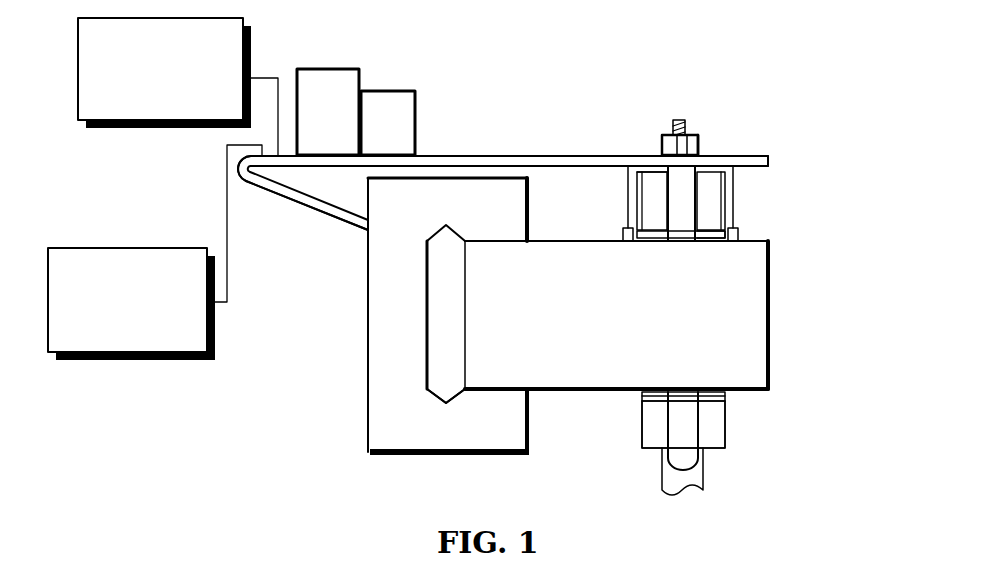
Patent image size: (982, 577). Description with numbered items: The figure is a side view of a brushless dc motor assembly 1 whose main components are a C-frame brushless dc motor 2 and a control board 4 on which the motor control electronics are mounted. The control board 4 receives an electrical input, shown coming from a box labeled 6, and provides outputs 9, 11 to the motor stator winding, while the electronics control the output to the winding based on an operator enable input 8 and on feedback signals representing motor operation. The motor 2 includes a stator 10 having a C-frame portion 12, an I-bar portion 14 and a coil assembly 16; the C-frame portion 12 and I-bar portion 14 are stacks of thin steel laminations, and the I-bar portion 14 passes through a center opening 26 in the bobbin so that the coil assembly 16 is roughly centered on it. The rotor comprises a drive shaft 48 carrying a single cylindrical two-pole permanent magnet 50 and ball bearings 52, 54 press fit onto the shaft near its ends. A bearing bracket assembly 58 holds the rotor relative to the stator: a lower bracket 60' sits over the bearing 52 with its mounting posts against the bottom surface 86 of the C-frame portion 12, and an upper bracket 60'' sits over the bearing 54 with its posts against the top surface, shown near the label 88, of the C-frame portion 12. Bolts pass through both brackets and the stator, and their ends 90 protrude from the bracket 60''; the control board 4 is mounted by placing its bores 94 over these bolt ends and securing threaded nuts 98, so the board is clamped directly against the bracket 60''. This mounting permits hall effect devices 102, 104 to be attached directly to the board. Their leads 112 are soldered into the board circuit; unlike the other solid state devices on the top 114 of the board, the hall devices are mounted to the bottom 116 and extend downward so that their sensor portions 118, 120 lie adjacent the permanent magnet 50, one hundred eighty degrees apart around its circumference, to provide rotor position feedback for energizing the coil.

The motor assembly 1 is at (835, 86).
The C-frame brushless dc motor 2 is at (812, 325).
The control board 4 is at (493, 140).
The electrical input 6 is at (168, 130).
The operator enable input 8 is at (150, 363).
The output 9 is at (283, 190).
The stator 10 is at (560, 404).
The output 11 is at (346, 222).
The C-frame portion 12 is at (625, 347).
The I-bar portion 14 is at (427, 315).
The coil assembly 16 is at (369, 373).
The center opening 26 is at (443, 398).
The drive shaft 48 is at (703, 483).
The permanent magnet 50 is at (725, 396).
The ball bearing 52 is at (727, 400).
The ball bearing 54 is at (712, 230).
The bearing bracket assembly 58 is at (686, 193).
The bearing bracket 60' is at (654, 454).
The bearing bracket 60'' is at (650, 131).
The bottom surface 86 is at (540, 392).
The body top surface 88 is at (543, 240).
The bolt end 90 is at (684, 120).
The bore 94 is at (662, 152).
The threaded nut 98 is at (700, 143).
The hall effect device 102 is at (617, 212).
The hall effect device 104 is at (746, 194).
The hall device lead 112 is at (619, 178).
The top of control board 114 is at (452, 155).
The bottom of control board 116 is at (535, 168).
The hall device sensor portion 118 is at (612, 238).
The hall device sensor portion 120 is at (739, 234).